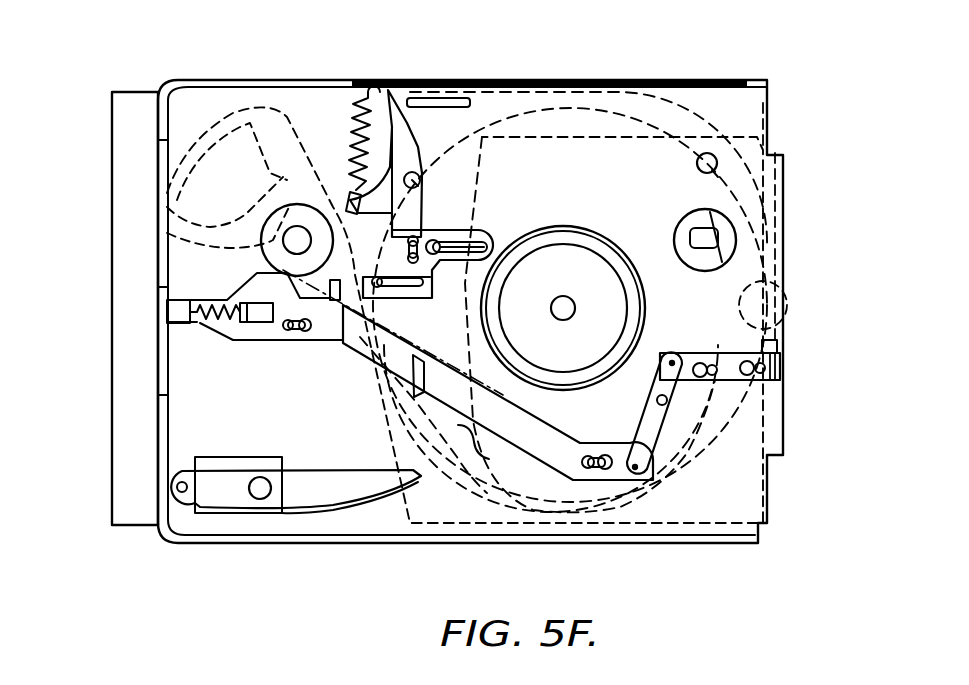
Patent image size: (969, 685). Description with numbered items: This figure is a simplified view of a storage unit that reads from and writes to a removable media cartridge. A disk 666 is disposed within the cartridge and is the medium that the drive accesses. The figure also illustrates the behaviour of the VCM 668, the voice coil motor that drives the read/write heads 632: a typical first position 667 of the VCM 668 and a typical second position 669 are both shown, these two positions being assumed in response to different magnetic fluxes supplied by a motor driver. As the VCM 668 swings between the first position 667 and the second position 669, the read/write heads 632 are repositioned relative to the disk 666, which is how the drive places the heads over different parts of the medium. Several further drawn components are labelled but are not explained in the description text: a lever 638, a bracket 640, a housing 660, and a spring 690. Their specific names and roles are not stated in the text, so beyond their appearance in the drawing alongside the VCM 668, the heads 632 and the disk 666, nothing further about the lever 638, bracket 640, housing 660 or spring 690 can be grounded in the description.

The read/write heads 632 is at (462, 437).
The latch lever 638 is at (315, 482).
The ratchet bracket 640 is at (420, 210).
The housing 660 is at (748, 132).
The disk 666 is at (727, 188).
The first position 667 is at (245, 107).
The VCM 668 is at (278, 100).
The second position 669 is at (163, 238).
The spring 690 is at (357, 145).